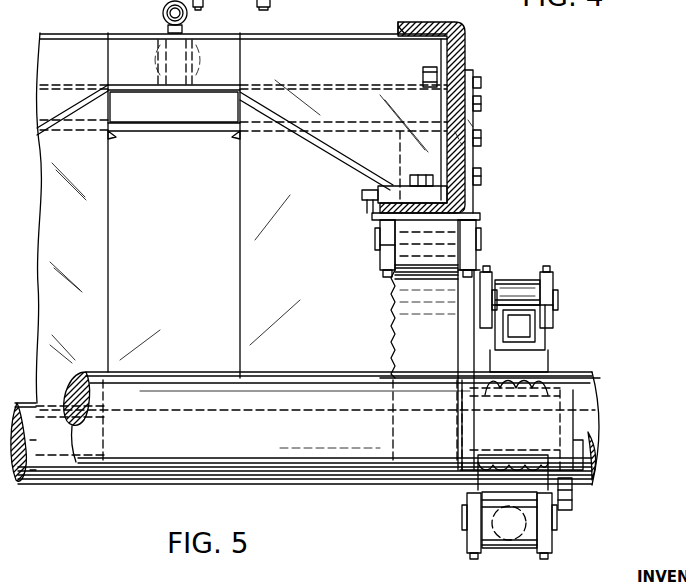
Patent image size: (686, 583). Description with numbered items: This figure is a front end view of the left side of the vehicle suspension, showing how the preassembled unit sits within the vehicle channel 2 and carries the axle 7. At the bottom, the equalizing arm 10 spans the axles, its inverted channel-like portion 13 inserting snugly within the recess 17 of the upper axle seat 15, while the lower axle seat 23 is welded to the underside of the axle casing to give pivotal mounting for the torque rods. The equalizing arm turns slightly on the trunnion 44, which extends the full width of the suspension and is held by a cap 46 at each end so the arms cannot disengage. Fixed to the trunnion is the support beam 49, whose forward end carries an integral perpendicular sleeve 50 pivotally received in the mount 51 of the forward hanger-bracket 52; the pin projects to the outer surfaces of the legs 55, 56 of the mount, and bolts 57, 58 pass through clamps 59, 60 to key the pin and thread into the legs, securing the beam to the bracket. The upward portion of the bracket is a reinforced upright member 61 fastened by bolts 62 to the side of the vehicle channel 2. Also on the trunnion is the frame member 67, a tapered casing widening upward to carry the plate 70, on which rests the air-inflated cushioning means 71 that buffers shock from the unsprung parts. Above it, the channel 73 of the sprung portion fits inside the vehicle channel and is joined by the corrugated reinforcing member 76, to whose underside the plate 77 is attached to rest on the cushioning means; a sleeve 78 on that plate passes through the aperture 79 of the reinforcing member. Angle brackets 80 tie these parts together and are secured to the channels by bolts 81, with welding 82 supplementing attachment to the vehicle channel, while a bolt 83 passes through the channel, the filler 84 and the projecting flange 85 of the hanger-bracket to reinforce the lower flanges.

The vehicle channel 2 is at (445, 17).
The axle 7 is at (123, 375).
The equalizing arm 10 is at (558, 355).
The inverted channel-like portion 13 is at (533, 335).
The upper axle seat 15 is at (542, 313).
The recess 17 is at (520, 330).
The lower axle seat 23 is at (527, 443).
The trunnion 44 is at (27, 488).
The cap 46 is at (573, 503).
The support beam 49 is at (402, 328).
The sleeve 50 is at (435, 255).
The mount 51 is at (473, 222).
The forward hanger-bracket 52 is at (470, 156).
The leg 55 is at (377, 228).
The leg 56 is at (474, 241).
The bolt 57 is at (387, 274).
The bolt 58 is at (470, 326).
The clamp 59 is at (382, 260).
The clamp 60 is at (476, 268).
The upright member 61 is at (470, 100).
The bolts 62 is at (473, 128).
The frame member 67 is at (110, 264).
The plate 70 is at (178, 132).
The cushioning means 71 is at (322, 106).
The channel 73 is at (412, 40).
The corrugated reinforcing member 76 is at (272, 48).
The plate 77 is at (55, 80).
The sleeve 78 is at (194, 30).
The aperture 79 is at (152, 40).
The angle bracket 80 is at (310, 140).
The bolts 81 is at (473, 72).
The welding 82 is at (396, 32).
The bolt 83 is at (380, 185).
The filler 84 is at (367, 202).
The projecting flange 85 is at (366, 217).